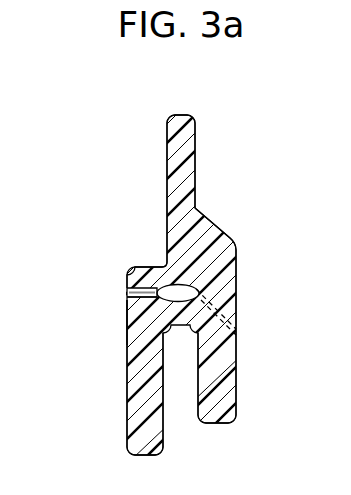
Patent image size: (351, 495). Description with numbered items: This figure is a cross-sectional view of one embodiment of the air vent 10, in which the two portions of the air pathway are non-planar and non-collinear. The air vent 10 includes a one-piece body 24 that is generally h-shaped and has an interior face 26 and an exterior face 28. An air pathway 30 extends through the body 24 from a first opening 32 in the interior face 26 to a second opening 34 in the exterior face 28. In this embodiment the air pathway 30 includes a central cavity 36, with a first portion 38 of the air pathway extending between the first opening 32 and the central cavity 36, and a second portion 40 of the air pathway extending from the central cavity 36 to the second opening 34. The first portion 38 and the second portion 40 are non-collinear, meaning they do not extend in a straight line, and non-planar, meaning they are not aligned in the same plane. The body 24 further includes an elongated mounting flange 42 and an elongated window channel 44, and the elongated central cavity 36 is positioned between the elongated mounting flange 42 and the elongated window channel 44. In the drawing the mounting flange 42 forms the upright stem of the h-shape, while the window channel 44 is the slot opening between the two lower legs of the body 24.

The air vent 10 is at (99, 128).
The one-piece body 24 is at (178, 265).
The interior face 26 is at (127, 336).
The exterior face 28 is at (237, 277).
The air pathway 30 is at (127, 366).
The first opening 32 is at (126, 292).
The second opening 34 is at (237, 338).
The central cavity 36 is at (158, 289).
The first portion of the air pathway 38 is at (138, 312).
The second portion of the air pathway 40 is at (229, 311).
The elongated mounting flange 42 is at (190, 150).
The elongated window channel 44 is at (181, 362).